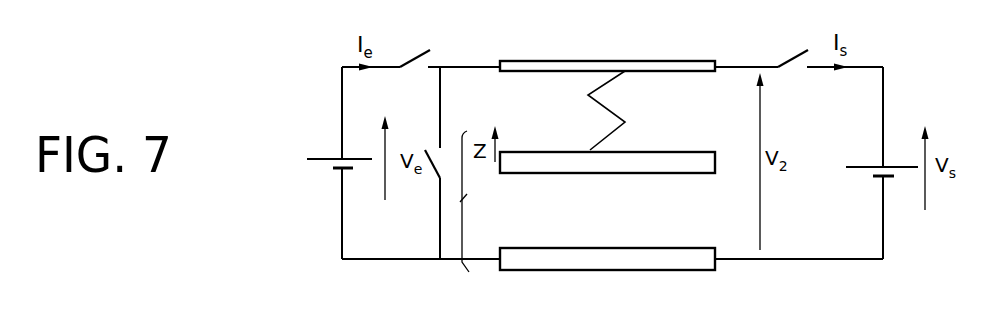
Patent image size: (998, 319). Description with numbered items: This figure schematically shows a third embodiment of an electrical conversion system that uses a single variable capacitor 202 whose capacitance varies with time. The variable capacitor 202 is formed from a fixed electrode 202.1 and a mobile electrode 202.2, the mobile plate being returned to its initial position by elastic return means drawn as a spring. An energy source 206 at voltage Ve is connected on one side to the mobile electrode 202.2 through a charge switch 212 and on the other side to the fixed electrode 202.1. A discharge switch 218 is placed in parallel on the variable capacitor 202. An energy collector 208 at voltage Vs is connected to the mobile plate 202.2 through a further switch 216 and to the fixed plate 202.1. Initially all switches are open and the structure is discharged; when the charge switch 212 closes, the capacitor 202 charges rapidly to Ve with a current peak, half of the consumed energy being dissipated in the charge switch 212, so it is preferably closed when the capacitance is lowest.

The variable capacitor 202 is at (452, 206).
The fixed electrode 202.1 is at (638, 258).
The mobile electrode 202.2 is at (638, 162).
The energy source 206 is at (325, 190).
The energy collector 208 is at (902, 124).
The charge switch 212 is at (423, 58).
The switch 216 is at (793, 57).
The discharge switch 218 is at (432, 147).